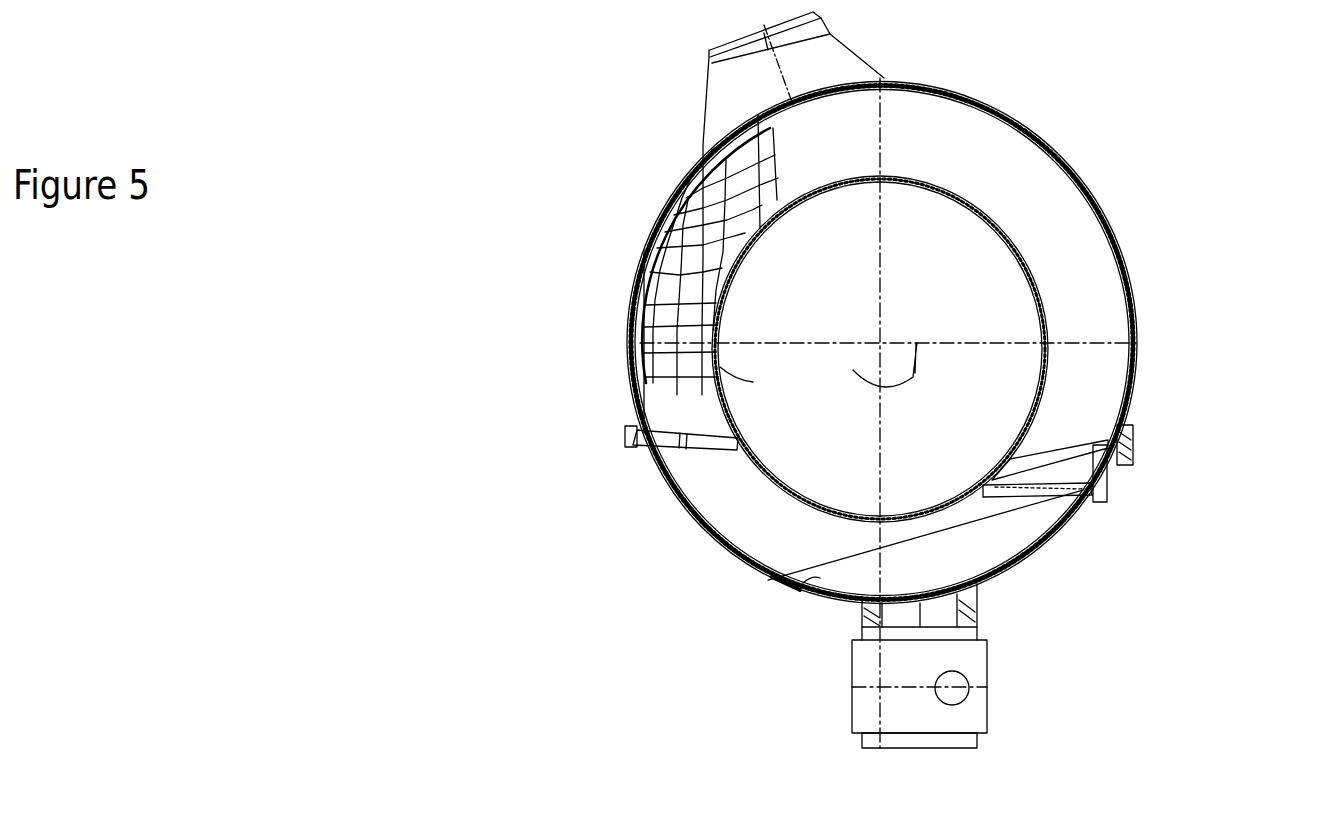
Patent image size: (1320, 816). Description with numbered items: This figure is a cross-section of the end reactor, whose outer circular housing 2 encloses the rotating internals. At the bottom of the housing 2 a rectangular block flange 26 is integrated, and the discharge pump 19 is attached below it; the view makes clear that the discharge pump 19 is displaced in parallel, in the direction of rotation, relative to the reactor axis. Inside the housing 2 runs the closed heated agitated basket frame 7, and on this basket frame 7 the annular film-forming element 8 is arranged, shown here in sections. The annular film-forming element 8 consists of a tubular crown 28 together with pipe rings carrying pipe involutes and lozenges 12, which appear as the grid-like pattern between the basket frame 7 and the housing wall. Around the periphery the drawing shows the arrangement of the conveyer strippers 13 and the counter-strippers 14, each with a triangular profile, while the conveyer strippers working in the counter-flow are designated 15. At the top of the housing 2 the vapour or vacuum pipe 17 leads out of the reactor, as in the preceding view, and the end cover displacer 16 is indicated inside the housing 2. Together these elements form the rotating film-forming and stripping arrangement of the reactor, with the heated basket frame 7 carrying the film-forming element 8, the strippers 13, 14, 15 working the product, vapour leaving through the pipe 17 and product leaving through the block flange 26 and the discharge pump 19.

The housing 2 is at (1143, 295).
The closed heated agitated basket frame 7 is at (630, 330).
The annular film-forming element 8 is at (647, 193).
The pipe rings with pipe involutes and lozenges 12 is at (633, 263).
The conveyer strippers 13 is at (1107, 502).
The counter-strippers 14 is at (625, 432).
The conveyer strippers in the counter-flow 15 is at (1118, 450).
The end cover displacer 16 is at (768, 590).
The vapour or vacuum pipe 17 is at (750, 79).
The discharge pump 19 is at (940, 652).
The rectangular block flange 26 is at (977, 603).
The tubular crown 28 is at (622, 372).